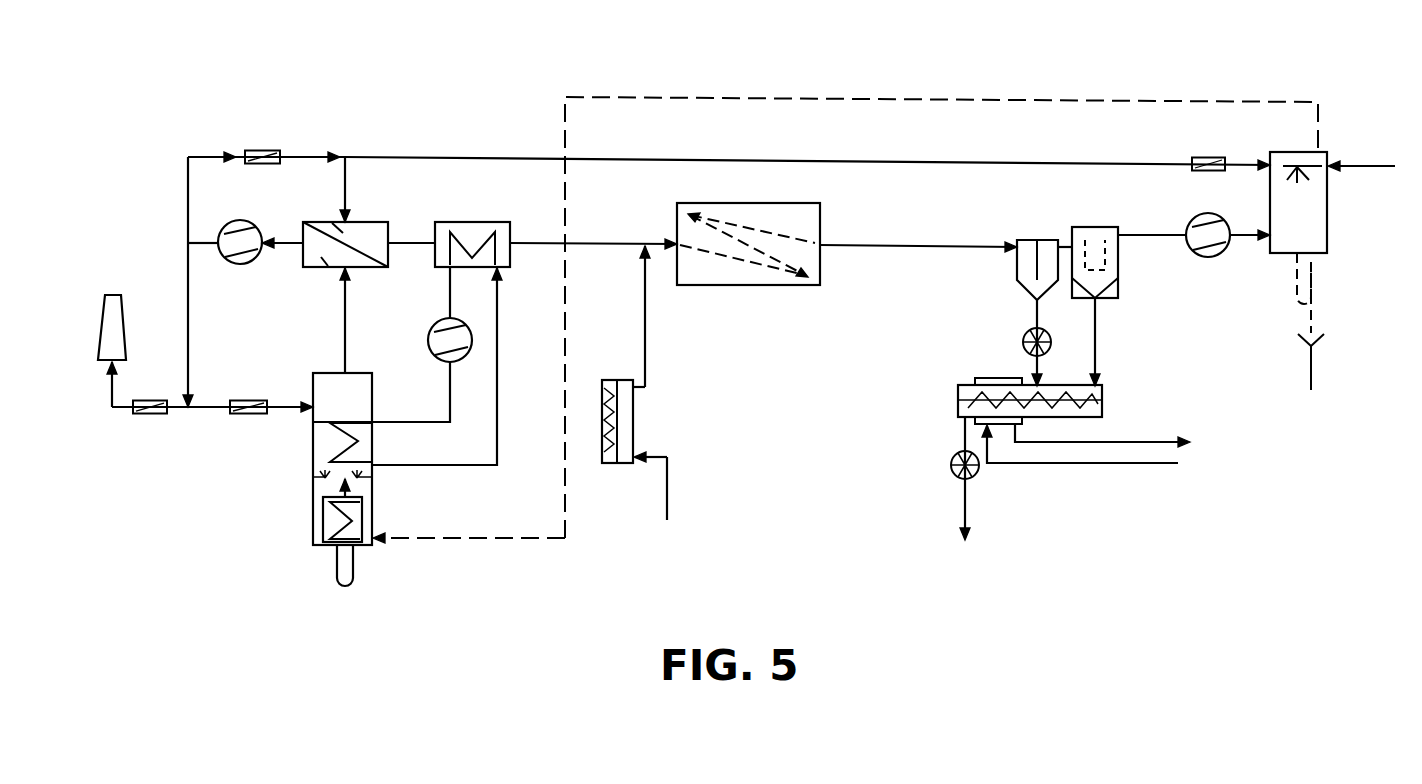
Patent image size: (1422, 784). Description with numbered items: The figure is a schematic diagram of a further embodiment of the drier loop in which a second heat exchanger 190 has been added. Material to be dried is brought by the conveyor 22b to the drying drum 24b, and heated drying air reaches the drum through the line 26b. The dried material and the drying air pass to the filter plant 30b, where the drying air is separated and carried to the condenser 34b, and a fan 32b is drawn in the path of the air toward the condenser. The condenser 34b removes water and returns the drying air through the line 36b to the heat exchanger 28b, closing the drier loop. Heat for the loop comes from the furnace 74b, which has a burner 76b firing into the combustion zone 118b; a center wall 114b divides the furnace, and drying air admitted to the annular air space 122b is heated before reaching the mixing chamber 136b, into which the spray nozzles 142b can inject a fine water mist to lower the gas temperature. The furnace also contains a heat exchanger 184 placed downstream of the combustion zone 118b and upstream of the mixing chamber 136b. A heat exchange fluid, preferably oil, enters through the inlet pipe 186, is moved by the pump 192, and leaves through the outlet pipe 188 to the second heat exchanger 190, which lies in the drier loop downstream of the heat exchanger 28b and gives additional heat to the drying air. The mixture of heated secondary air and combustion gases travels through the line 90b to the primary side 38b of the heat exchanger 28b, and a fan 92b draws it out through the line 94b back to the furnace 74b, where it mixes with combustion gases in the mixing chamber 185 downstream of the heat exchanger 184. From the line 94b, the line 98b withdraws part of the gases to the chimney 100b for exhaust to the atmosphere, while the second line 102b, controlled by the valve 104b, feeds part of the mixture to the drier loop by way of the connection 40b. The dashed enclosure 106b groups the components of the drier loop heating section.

The conveyor 22b is at (640, 420).
The drying drum 24b is at (748, 285).
The line 26b is at (628, 244).
The heat exchanger 28b is at (356, 247).
The filter plant 30b is at (1108, 502).
The fan 32b is at (1208, 258).
The condenser 34b is at (1327, 225).
The line 36b is at (893, 160).
The primary side 38b is at (328, 258).
The gas inlet conduit 40b is at (335, 222).
The furnace 74b is at (345, 478).
The burner 76b is at (352, 570).
The line 90b is at (345, 307).
The fan 92b is at (232, 264).
The line 94b is at (188, 332).
The line 98b is at (112, 404).
The chimney 100b is at (112, 295).
The second line 102b is at (188, 170).
The valve 104b is at (262, 150).
The enclosure 106b is at (855, 99).
The center wall 114b is at (320, 480).
The combustion zone 118b is at (385, 538).
The annular air space 122b is at (323, 525).
The mixing chamber 136b is at (318, 438).
The spray nozzles 142b is at (360, 477).
The heat exchanger 184 is at (365, 432).
The mixing chamber 185 is at (322, 378).
The inlet pipe 186 is at (445, 415).
The outlet pipe 188 is at (437, 468).
The second heat exchanger 190 is at (470, 222).
The pump 192 is at (428, 345).